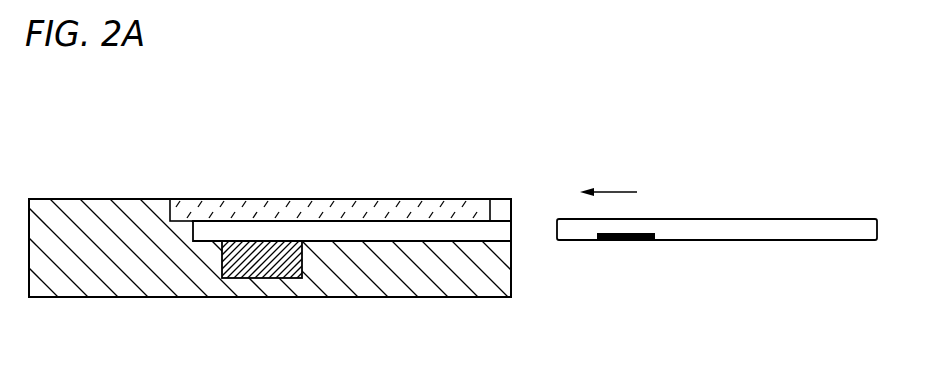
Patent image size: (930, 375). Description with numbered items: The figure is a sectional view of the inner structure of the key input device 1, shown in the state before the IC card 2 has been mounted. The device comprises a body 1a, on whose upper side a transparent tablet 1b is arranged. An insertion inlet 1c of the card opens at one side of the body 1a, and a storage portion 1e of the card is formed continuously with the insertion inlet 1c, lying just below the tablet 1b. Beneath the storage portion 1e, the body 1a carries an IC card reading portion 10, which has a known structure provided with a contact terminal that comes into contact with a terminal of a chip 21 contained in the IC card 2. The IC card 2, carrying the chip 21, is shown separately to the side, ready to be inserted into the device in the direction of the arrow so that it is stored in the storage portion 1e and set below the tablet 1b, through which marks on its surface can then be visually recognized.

The key input device 1 is at (283, 220).
The body 1a is at (97, 210).
The transparent tablet 1b is at (327, 203).
The insertion inlet 1c is at (512, 228).
The storage portion 1e is at (253, 229).
The IC card reading portion 10 is at (262, 278).
The IC card 2 is at (717, 197).
The chip 21 is at (617, 236).